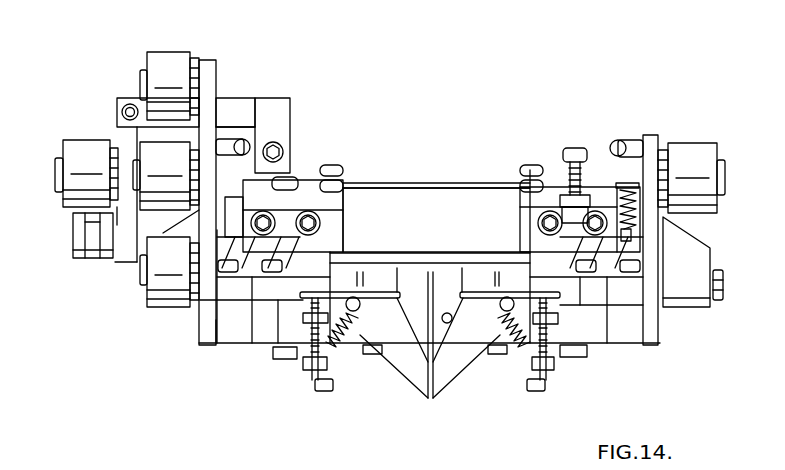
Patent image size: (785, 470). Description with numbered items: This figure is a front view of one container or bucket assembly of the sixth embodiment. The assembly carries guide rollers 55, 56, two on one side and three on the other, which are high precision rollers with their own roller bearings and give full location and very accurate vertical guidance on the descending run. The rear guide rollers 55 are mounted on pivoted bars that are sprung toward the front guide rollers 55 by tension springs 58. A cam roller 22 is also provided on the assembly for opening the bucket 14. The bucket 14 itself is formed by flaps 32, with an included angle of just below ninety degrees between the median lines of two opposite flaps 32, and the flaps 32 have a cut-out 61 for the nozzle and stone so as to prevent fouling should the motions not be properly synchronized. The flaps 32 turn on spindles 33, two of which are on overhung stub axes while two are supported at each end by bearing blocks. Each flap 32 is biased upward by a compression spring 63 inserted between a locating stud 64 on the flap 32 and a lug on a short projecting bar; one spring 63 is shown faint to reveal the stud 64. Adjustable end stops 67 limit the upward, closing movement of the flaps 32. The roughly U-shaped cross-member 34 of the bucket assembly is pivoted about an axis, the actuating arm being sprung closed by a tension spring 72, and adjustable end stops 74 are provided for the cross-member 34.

The bucket 14 is at (418, 398).
The cam roller 22 is at (87, 152).
The flap 32 is at (407, 363).
The spindle 33 is at (338, 298).
The cross-member 34 is at (500, 193).
The guide roller 55 is at (166, 62).
The guide roller 56 is at (155, 152).
The tension spring 58 is at (247, 120).
The cut-out 61 is at (449, 362).
The compression spring 63 is at (344, 345).
The locating stud 64 is at (362, 310).
The adjustable end stop 67 is at (313, 310).
The tension spring 72 is at (627, 197).
The adjustable end stop 74 is at (563, 172).